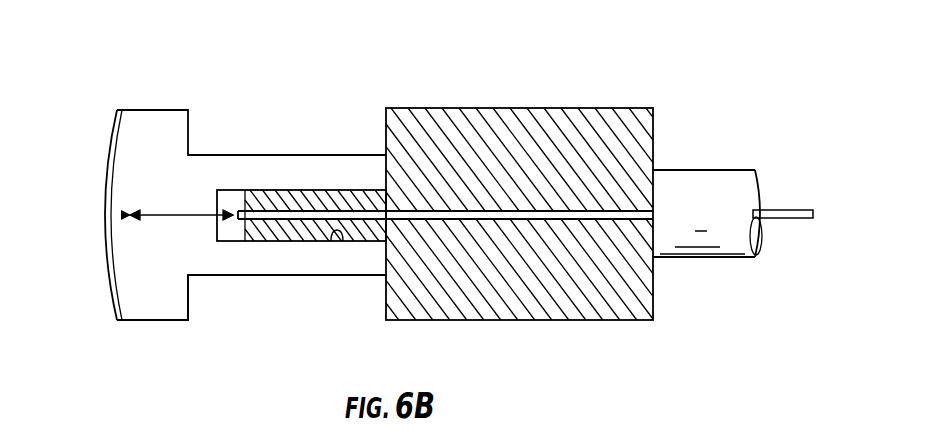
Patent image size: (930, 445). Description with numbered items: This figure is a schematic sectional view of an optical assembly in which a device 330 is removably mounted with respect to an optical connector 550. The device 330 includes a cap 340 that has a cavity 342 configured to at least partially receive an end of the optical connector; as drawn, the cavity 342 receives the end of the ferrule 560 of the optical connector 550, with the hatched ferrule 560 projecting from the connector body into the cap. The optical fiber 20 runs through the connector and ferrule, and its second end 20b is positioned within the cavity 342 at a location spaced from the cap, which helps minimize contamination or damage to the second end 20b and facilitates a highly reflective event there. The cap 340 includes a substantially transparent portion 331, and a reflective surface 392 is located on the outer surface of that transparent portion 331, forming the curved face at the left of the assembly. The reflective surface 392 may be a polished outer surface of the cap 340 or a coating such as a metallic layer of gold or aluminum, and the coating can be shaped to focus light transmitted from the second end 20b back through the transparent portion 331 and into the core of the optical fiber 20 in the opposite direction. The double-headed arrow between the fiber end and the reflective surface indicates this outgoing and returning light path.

The optical fiber 20 is at (797, 206).
The second end of the optical fiber 20b is at (237, 222).
The device 330 is at (205, 213).
The transparent portion 331 is at (170, 297).
The cap 340 is at (183, 110).
The cavity 342 is at (345, 241).
The reflective surface 392 is at (105, 243).
The optical connector 550 is at (522, 98).
The ferrule 560 is at (288, 189).